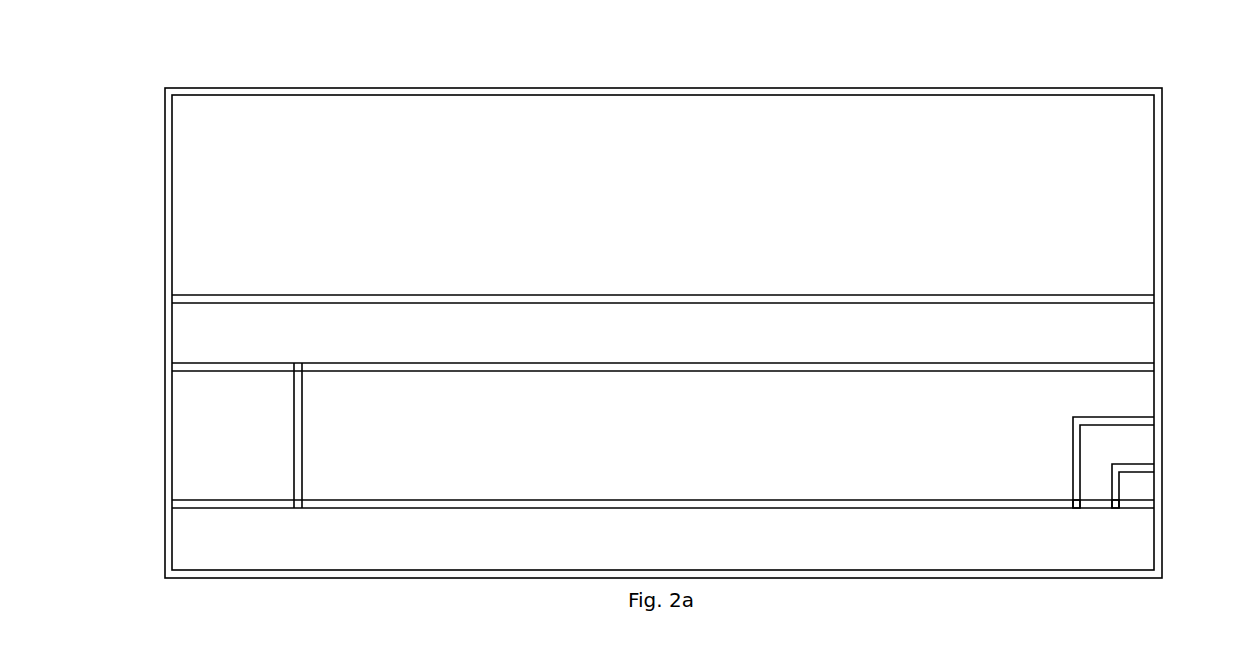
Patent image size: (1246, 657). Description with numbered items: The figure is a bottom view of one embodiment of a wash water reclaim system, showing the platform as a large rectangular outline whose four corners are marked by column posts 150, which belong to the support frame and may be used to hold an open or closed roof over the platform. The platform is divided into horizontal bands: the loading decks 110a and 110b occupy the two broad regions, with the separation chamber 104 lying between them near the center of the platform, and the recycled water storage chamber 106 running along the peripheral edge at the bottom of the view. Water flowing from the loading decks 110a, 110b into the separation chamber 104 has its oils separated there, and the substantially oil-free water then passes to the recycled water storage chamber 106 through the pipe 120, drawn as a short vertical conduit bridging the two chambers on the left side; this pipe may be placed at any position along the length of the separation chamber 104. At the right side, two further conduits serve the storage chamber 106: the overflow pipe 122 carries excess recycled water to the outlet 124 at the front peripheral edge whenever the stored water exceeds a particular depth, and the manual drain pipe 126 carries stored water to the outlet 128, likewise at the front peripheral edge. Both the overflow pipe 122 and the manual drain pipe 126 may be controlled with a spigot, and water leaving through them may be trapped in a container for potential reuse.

The column posts 150 is at (168, 90).
The loading deck 110a is at (663, 244).
The separation chamber 104 is at (663, 333).
The loading deck 110b is at (663, 435).
The recycled water storage chamber 106 is at (663, 530).
The pipe 120 is at (297, 500).
The overflow pipe 122 is at (1113, 500).
The outlet 124 is at (1160, 469).
The manual drain pipe 126 is at (1073, 500).
The outlet 128 is at (1160, 422).